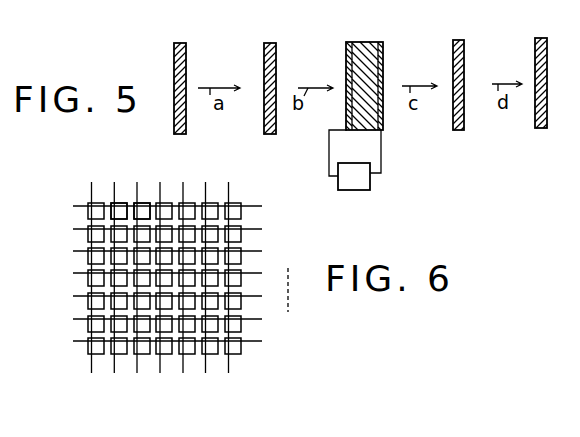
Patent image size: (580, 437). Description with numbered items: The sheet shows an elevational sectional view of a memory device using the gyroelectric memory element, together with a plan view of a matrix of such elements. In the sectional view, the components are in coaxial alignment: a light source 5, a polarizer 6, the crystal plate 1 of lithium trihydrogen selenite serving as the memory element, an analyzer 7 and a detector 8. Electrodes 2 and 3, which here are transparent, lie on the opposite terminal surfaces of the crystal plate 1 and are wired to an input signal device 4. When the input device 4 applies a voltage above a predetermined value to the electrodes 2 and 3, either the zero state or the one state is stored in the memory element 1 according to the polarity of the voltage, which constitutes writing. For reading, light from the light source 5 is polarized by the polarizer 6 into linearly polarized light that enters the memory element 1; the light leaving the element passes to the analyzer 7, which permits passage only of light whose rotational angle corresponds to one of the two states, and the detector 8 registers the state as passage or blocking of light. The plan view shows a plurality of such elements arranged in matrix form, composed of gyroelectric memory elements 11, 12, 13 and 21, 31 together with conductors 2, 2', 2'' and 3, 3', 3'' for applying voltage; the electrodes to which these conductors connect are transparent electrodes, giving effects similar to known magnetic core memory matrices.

In FIG. 5, the crystal plate 1 is at (360, 66).
In FIG. 5, the electrode 2 is at (337, 71).
In FIG. 6, the electrode 2 is at (92, 295).
In FIG. 5, the electrode 3 is at (388, 71).
In FIG. 6, the electrode 3 is at (183, 210).
In FIG. 5, the input signal device 4 is at (392, 180).
In FIG. 5, the light source 5 is at (183, 43).
In FIG. 5, the polarizer 6 is at (266, 43).
In FIG. 5, the analyzer 7 is at (457, 40).
In FIG. 5, the detector 8 is at (541, 38).
In FIG. 6, the gyroelectric memory element 11 is at (88, 211).
In FIG. 6, the gyroelectric memory element 12 is at (88, 234).
In FIG. 6, the gyroelectric memory element 13 is at (88, 256).
In FIG. 6, the gyroelectric memory element 21 is at (121, 211).
In FIG. 6, the gyroelectric memory element 31 is at (146, 210).
In FIG. 6, the conductor 2' is at (116, 295).
In FIG. 6, the conductor 2'' is at (142, 295).
In FIG. 6, the conductor 3' is at (185, 234).
In FIG. 6, the conductor 3'' is at (188, 258).